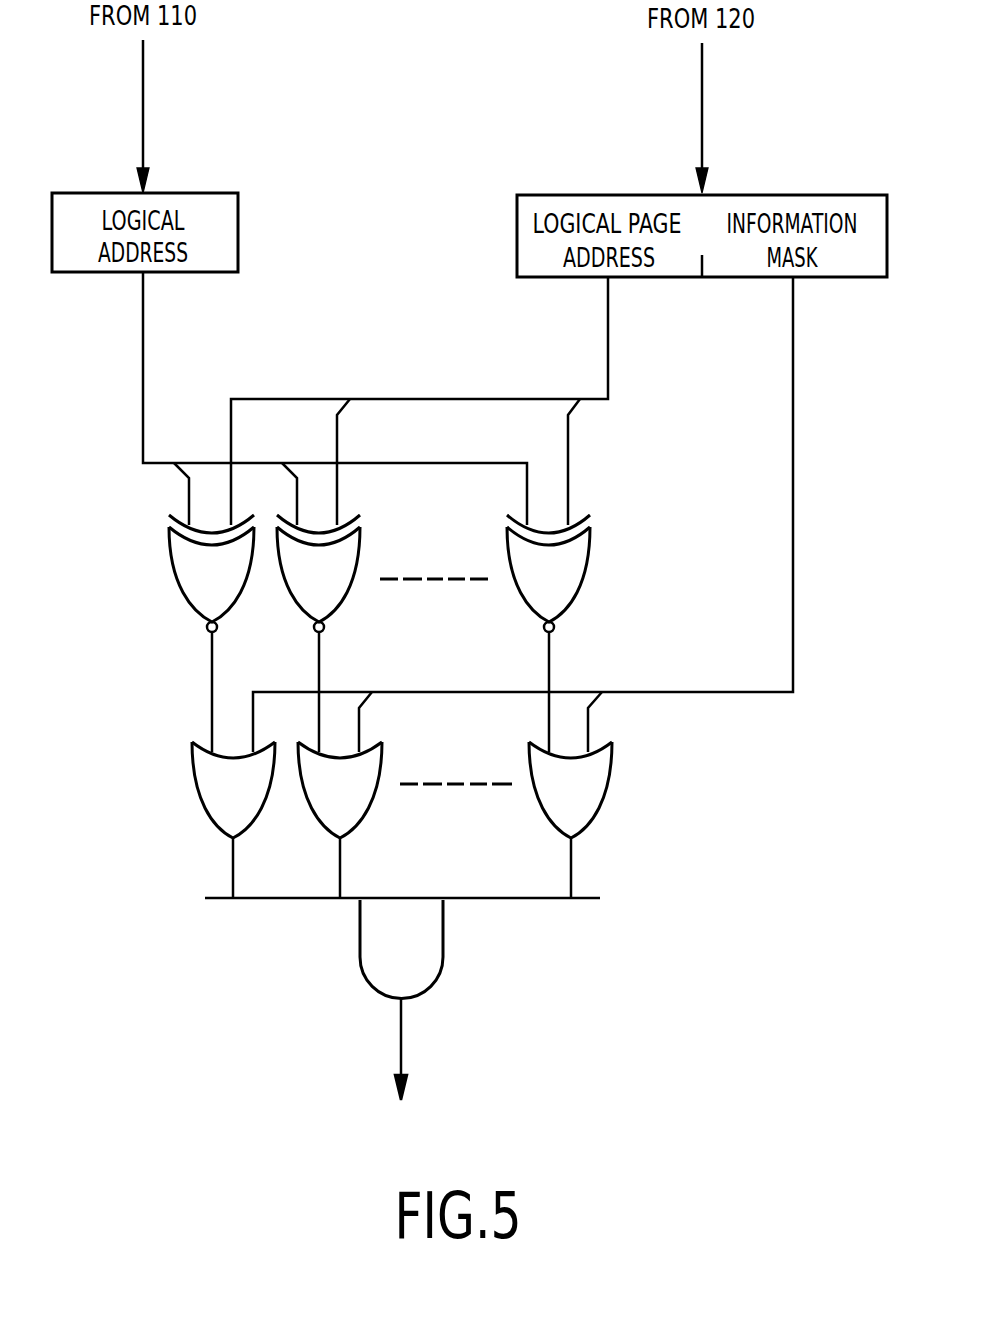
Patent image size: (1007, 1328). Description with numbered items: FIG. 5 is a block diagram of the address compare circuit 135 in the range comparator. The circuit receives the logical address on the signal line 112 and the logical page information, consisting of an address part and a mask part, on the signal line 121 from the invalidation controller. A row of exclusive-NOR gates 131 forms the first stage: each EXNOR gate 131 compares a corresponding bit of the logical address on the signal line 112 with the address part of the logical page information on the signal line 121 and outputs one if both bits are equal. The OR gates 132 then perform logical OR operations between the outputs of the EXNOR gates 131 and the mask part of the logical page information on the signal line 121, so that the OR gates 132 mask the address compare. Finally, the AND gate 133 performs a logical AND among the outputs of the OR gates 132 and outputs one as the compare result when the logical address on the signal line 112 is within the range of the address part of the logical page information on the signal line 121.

The signal line 112 is at (143, 118).
The signal line 121 is at (702, 122).
The exclusive-NOR gates 131 is at (590, 579).
The OR gates 132 is at (627, 774).
The AND gate 133 is at (443, 930).
The address compare circuit 135 is at (491, 686).